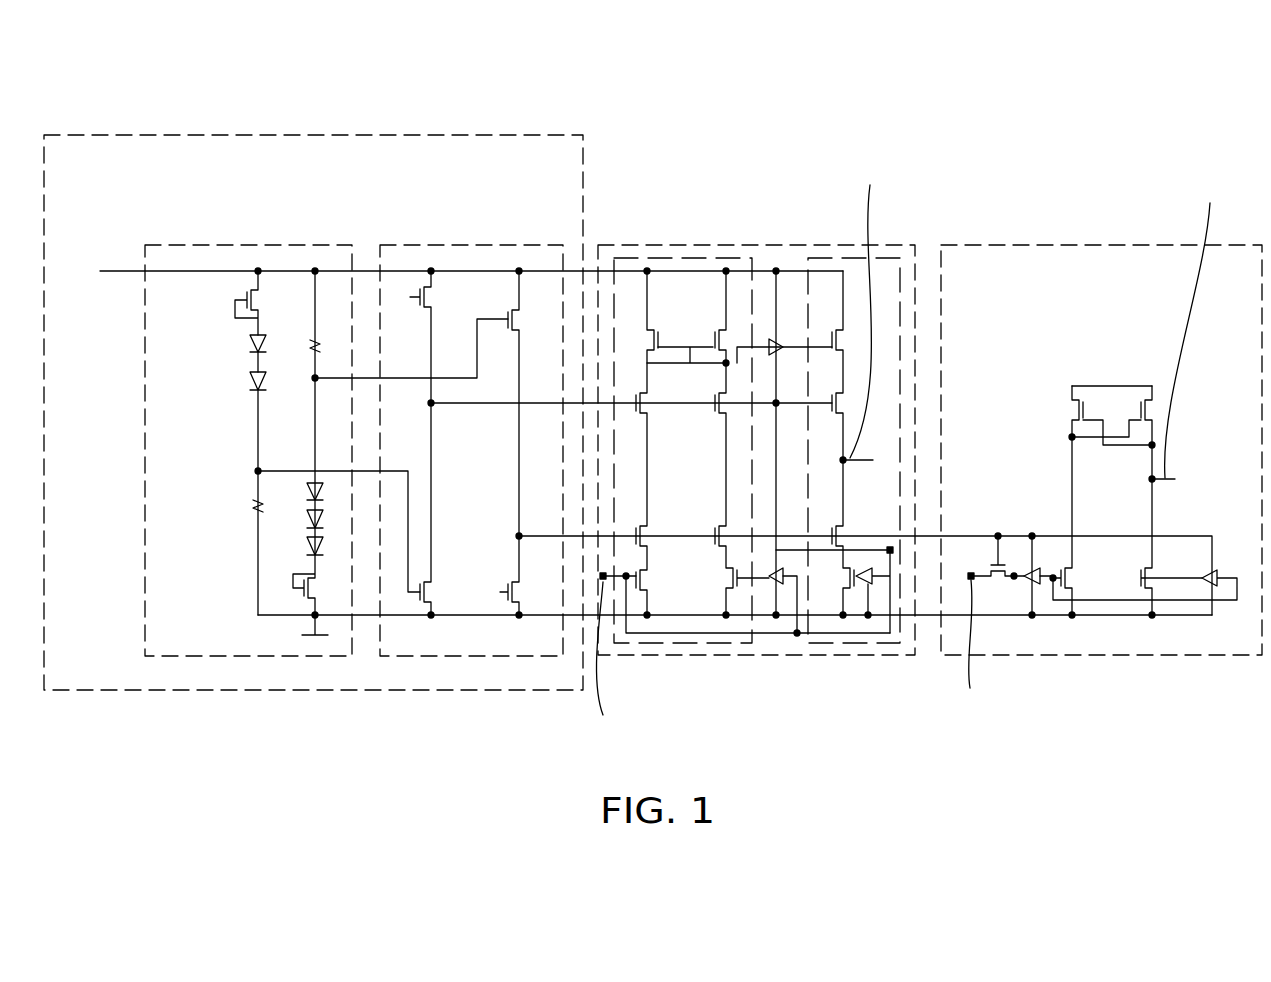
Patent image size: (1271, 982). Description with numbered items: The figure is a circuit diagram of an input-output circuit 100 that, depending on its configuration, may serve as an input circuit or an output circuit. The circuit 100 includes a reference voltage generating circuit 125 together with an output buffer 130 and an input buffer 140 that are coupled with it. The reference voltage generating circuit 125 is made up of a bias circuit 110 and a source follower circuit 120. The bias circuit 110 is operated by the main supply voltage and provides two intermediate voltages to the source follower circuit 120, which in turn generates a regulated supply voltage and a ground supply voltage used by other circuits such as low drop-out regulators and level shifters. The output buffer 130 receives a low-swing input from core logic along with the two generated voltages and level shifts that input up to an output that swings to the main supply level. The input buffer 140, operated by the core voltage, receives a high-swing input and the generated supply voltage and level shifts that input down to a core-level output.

The circuit 100 is at (977, 88).
The bias circuit 110 is at (248, 243).
The source follower circuit 120 is at (432, 243).
The reference voltage generating circuit 125 is at (300, 133).
The output buffer 130 is at (706, 243).
The input buffer 140 is at (1072, 243).